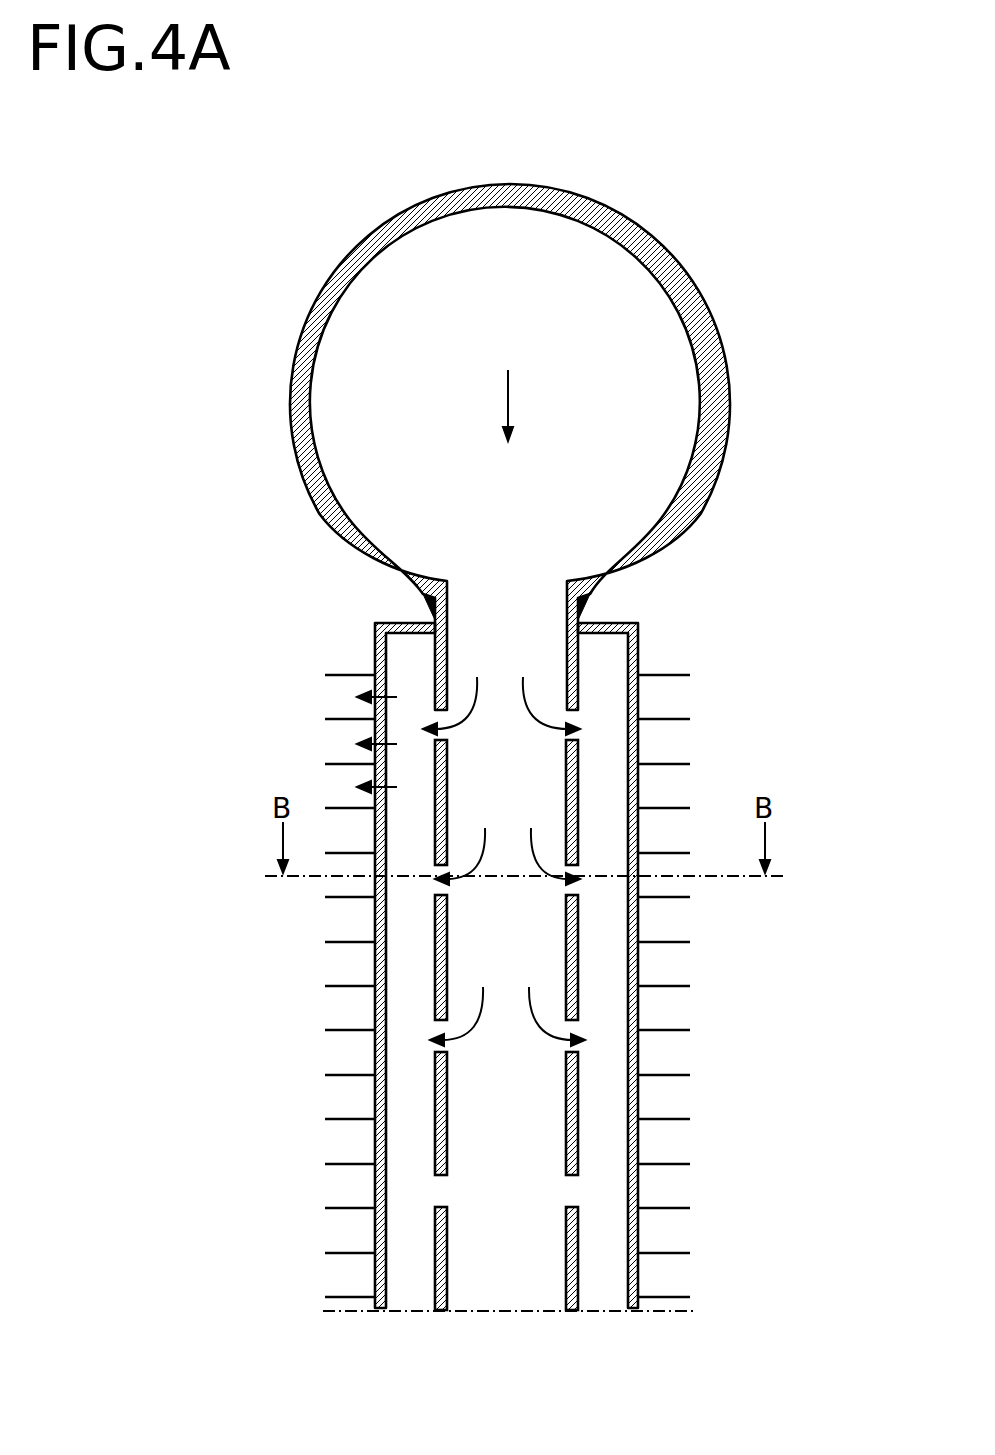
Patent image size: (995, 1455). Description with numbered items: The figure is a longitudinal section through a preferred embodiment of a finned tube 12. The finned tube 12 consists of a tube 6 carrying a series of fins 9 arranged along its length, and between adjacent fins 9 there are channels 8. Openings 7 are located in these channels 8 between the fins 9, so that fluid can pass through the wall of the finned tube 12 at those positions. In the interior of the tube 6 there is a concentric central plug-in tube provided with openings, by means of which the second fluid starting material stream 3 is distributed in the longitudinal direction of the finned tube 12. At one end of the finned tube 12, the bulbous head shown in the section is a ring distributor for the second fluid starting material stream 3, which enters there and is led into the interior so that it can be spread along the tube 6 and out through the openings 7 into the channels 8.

The second fluid starting material stream 3 is at (508, 412).
The tube 6 is at (376, 1222).
The openings 7 is at (377, 919).
The channels 8 is at (323, 693).
The fins 9 is at (337, 1119).
The finned tube 12 is at (292, 1016).